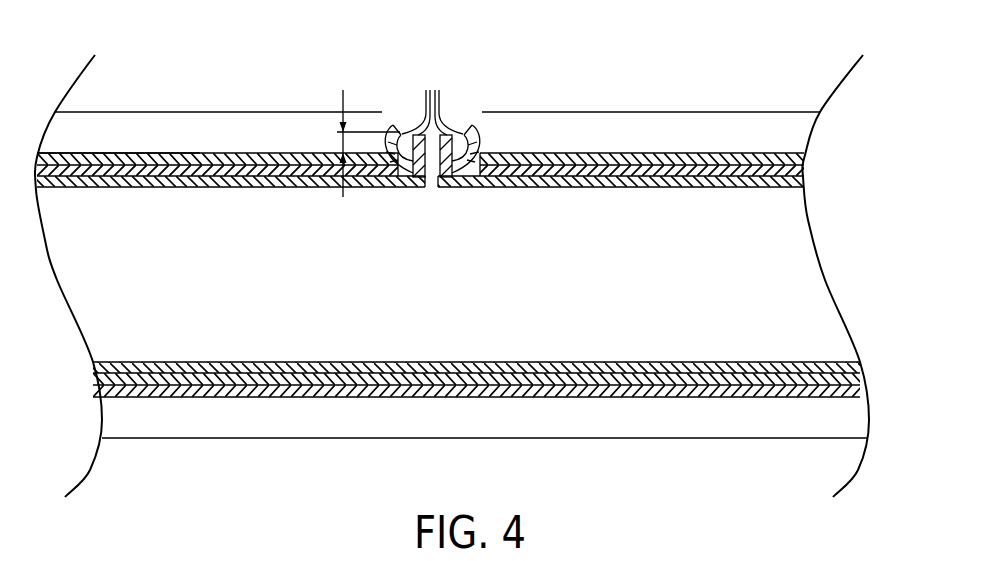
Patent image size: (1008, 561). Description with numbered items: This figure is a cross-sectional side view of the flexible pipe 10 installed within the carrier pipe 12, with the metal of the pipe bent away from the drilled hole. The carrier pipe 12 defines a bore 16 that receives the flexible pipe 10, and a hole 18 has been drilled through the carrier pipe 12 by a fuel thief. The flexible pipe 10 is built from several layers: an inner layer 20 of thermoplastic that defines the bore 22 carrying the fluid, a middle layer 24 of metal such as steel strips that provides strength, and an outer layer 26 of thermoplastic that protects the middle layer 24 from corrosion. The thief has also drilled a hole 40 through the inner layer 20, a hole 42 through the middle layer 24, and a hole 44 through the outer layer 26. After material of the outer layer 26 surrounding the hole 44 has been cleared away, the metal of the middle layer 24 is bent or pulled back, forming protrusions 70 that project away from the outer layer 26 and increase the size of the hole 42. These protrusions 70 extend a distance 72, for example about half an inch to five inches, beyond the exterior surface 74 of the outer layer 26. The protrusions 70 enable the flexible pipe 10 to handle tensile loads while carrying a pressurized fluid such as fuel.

The flexible pipe 10 is at (856, 297).
The carrier pipe 12 is at (192, 112).
The bore 16 is at (204, 426).
The hole 18 is at (497, 106).
The inner layer 20 is at (604, 178).
The bore 22 is at (192, 275).
The middle layer 24 is at (680, 172).
The outer layer 26 is at (720, 153).
The hole 40 is at (426, 187).
The hole 42 is at (462, 178).
The hole 44 is at (476, 140).
The protrusions 70 is at (432, 100).
The distance 72 is at (343, 102).
The exterior surface 74 is at (92, 153).